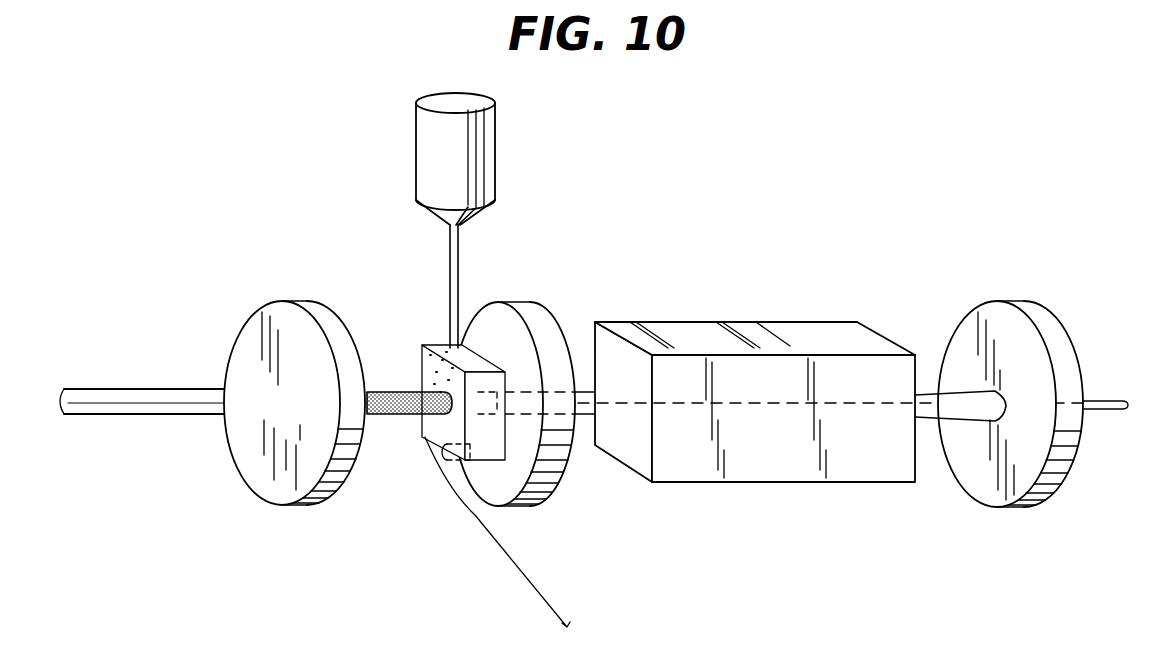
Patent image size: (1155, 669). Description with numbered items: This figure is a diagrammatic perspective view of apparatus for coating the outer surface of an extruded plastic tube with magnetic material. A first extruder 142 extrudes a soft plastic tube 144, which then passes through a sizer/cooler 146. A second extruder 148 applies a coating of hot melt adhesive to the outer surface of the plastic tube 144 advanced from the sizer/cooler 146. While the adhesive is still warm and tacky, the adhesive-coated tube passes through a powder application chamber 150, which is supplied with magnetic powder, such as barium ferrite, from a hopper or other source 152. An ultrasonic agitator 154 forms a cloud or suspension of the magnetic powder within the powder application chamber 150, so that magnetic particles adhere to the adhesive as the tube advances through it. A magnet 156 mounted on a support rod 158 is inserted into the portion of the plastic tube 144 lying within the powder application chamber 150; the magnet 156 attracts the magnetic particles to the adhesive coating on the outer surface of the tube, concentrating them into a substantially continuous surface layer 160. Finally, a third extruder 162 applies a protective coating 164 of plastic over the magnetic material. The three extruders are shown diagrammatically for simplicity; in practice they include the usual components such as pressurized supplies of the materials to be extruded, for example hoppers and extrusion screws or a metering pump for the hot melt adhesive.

The first extruder 142 is at (1047, 323).
The soft plastic tube 144 is at (969, 391).
The sizer/cooler 146 is at (760, 339).
The second extruder 148 is at (525, 322).
The powder application chamber 150 is at (432, 366).
The hopper 152 is at (490, 187).
The ultrasonic agitator 154 is at (449, 462).
The magnet 156 is at (557, 400).
The support rod 158 is at (1107, 399).
The surface layer 160 is at (383, 413).
The third extruder 162 is at (250, 380).
The protective coating 164 is at (113, 391).